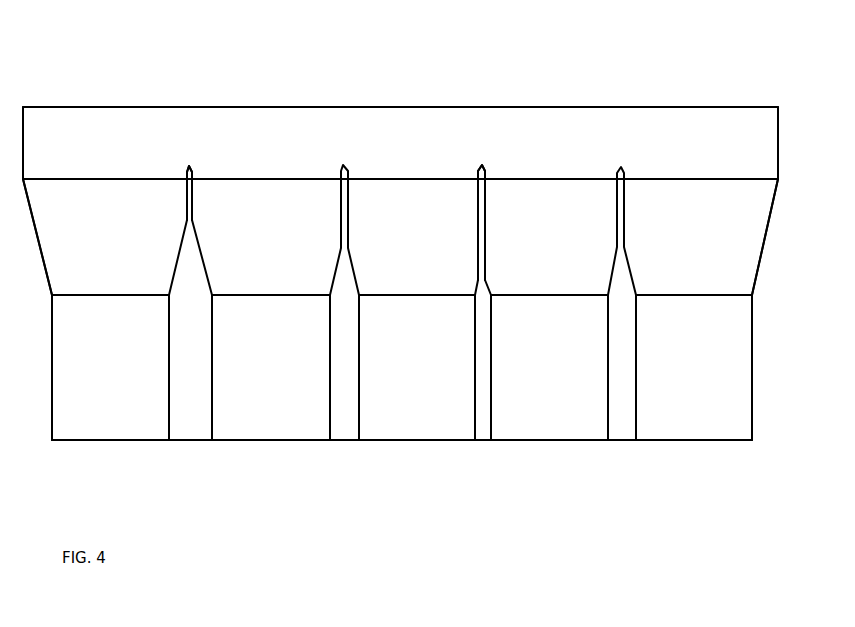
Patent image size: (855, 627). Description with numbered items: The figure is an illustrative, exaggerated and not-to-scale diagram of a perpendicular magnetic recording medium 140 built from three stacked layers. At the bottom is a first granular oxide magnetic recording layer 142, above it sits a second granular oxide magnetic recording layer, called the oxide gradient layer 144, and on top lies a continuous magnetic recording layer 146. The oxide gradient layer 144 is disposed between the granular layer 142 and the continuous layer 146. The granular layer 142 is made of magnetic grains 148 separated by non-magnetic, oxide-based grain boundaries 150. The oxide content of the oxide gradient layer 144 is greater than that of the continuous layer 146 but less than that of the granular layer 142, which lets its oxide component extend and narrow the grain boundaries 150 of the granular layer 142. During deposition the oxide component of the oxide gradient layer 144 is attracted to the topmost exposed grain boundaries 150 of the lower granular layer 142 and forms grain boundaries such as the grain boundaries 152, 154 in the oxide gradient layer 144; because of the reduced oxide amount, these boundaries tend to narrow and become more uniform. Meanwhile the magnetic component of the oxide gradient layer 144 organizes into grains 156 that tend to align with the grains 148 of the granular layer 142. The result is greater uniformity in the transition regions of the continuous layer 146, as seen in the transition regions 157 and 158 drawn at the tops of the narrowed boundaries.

The perpendicular magnetic recording medium 140 is at (136, 31).
The first granular oxide magnetic recording layer 142 is at (740, 438).
The second granular oxide magnetic recording layer 144 is at (768, 248).
The continuous magnetic recording layer 146 is at (666, 97).
The magnetic grains 148 is at (103, 428).
The grain boundaries 150 is at (187, 428).
The grain boundary 152 is at (487, 232).
The grain boundary 154 is at (193, 200).
The grains 156 is at (103, 215).
The transition region 157 is at (486, 165).
The transition region 158 is at (193, 171).